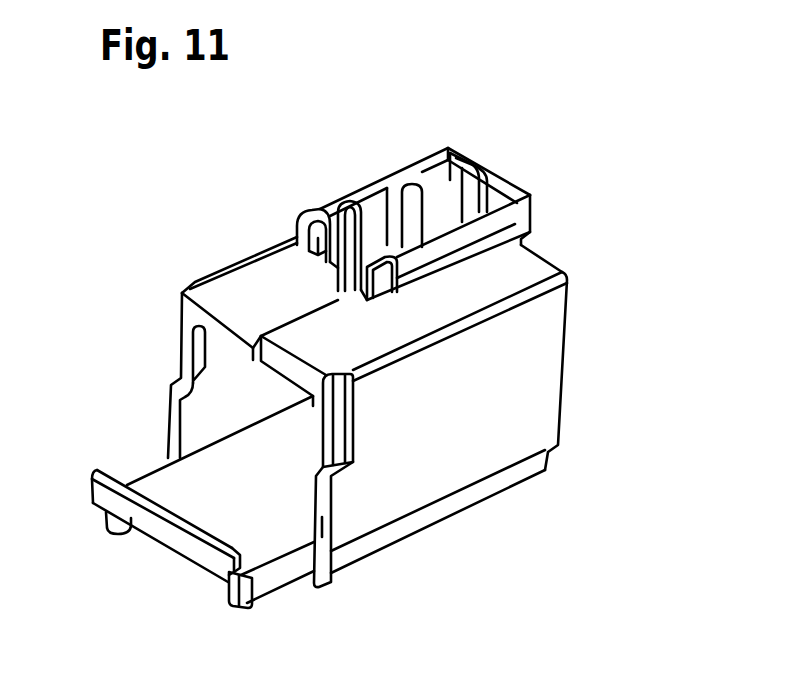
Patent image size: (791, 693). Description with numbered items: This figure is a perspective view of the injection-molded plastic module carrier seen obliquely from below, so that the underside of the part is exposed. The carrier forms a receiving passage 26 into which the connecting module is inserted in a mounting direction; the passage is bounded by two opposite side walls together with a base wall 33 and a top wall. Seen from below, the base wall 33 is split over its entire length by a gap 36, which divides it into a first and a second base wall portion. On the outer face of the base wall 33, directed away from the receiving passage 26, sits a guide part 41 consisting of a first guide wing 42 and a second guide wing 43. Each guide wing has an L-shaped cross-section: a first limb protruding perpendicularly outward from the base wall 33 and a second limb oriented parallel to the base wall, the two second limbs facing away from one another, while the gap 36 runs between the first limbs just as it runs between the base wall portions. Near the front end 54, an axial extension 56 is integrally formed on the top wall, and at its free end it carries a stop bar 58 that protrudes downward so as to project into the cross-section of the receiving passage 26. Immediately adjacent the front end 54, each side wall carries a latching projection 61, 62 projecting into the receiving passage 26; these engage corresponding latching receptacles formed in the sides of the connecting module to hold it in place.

The receiving passage 26 is at (190, 472).
The base wall 33 is at (229, 352).
The gap 36 is at (284, 322).
The guide part 41 is at (494, 168).
The first guide wing 42 is at (456, 144).
The second guide wing 43 is at (531, 189).
The front end 54 is at (342, 558).
The axial extension 56 is at (260, 548).
The stop bar 58 is at (175, 548).
The latching projection 61 is at (193, 400).
The latching projection 62 is at (318, 424).